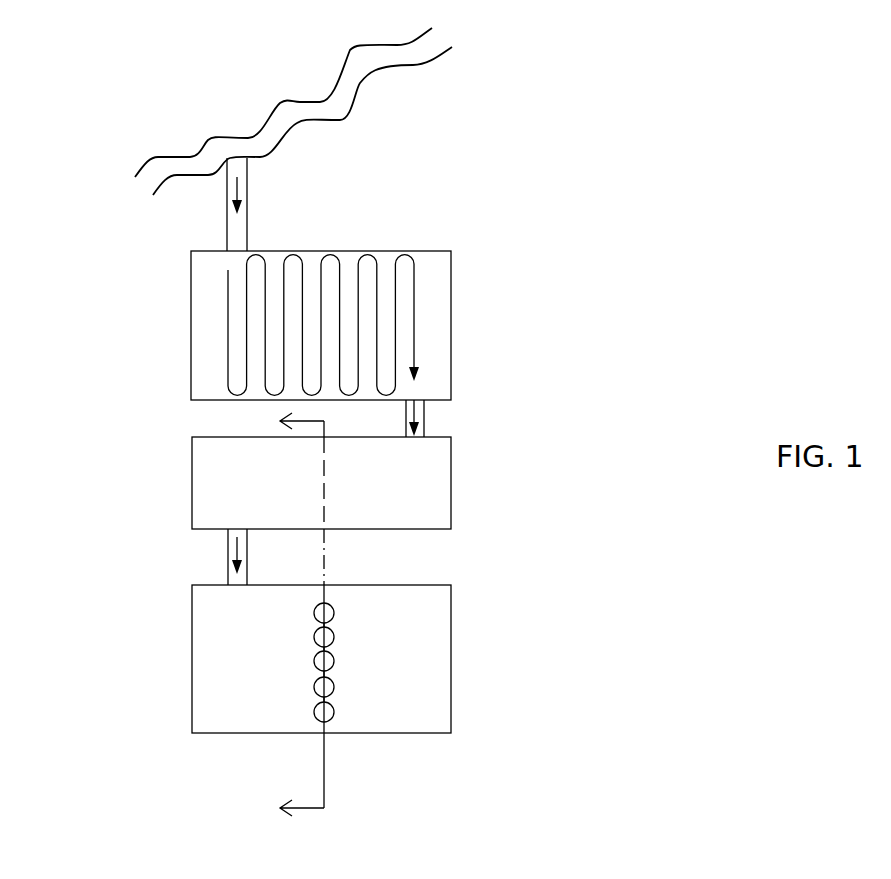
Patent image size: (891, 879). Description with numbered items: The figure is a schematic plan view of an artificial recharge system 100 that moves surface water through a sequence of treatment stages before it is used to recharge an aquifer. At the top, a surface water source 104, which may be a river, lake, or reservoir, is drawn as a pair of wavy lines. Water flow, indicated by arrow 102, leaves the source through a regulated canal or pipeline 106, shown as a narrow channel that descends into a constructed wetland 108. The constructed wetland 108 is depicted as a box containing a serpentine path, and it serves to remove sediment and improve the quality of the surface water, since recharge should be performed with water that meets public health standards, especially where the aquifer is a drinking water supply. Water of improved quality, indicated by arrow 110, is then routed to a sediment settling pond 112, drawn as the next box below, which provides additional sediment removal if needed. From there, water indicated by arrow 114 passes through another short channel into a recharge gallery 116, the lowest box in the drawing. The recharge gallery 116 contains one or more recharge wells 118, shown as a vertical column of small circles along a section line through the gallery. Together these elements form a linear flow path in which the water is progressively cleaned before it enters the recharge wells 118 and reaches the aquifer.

The artificial recharge system 100 is at (721, 191).
The water flow arrow 102 is at (240, 193).
The surface water source 104 is at (280, 117).
The regulated canal or pipeline 106 is at (227, 232).
The constructed wetland 108 is at (452, 323).
The water flow arrow 110 is at (416, 428).
The sediment settling pond 112 is at (452, 485).
The water flow arrow 114 is at (236, 563).
The recharge gallery 116 is at (452, 672).
The recharge wells 118 is at (332, 618).